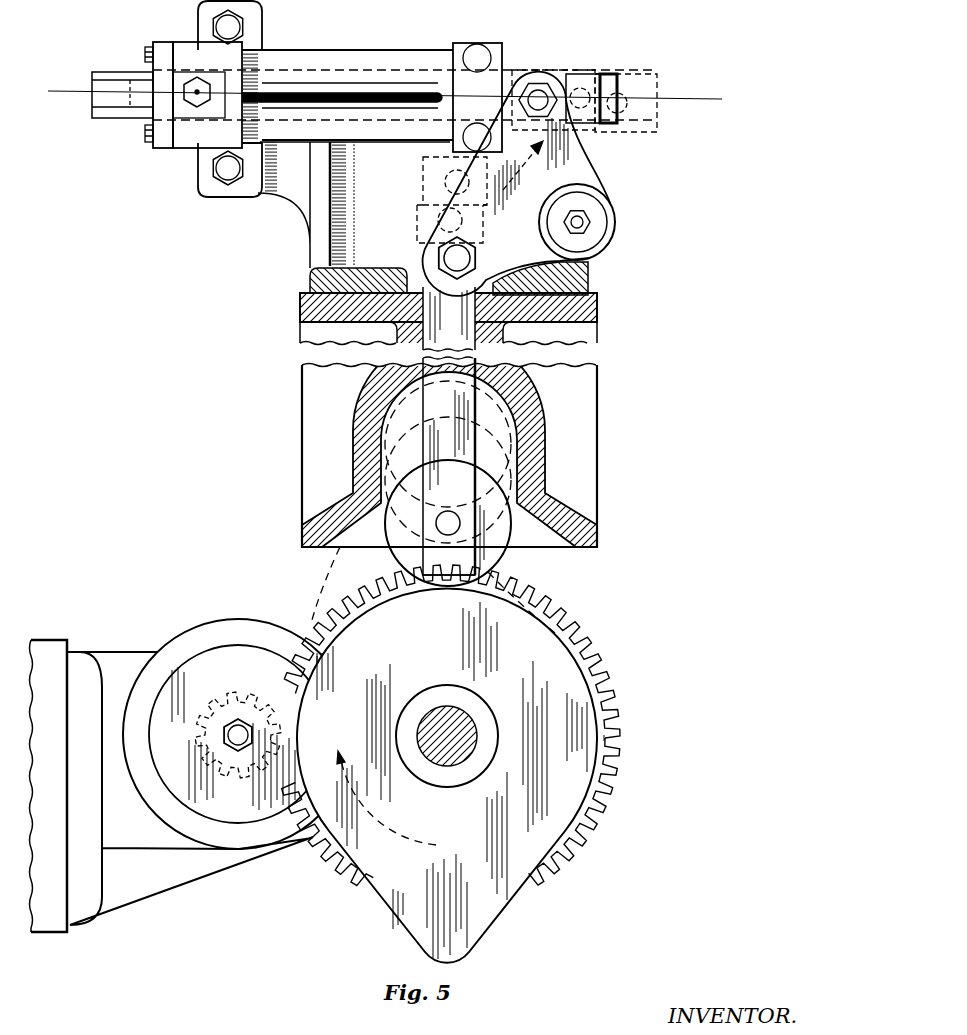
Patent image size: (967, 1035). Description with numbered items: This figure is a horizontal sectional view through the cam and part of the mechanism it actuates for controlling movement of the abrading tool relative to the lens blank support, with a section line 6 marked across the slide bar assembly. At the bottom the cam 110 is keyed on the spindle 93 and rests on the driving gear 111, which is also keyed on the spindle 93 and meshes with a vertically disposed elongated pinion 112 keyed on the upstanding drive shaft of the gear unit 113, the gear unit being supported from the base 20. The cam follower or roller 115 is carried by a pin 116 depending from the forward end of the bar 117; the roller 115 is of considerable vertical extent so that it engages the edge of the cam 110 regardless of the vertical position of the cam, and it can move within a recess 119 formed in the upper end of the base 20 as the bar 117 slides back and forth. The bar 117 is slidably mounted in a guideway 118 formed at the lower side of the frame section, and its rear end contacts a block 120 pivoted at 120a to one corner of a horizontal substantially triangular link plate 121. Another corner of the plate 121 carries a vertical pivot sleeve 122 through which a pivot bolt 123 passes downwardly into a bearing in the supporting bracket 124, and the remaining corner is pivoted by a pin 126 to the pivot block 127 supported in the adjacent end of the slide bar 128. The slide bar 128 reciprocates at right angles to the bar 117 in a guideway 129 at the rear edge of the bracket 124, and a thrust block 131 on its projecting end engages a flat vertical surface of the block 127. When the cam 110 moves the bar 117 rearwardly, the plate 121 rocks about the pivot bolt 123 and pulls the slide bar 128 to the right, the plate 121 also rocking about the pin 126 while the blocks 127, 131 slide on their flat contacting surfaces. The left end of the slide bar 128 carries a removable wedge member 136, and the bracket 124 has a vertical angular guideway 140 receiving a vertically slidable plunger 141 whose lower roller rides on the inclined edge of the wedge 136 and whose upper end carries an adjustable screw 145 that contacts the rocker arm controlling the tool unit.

The section line 6- 6 is at (692, 101).
The supporting base 20 is at (583, 403).
The spindle 93 is at (430, 706).
The cam 110 is at (479, 892).
The driving gear 111 is at (605, 797).
The pinion 112 is at (237, 702).
The gear unit 113 is at (237, 633).
The cam follower roller 115 is at (63, 693).
The pin 116 is at (452, 505).
The bar 117 is at (437, 562).
The guideway 118 is at (472, 330).
The recess 119 is at (358, 433).
The block 120 is at (428, 265).
The pivot 120a is at (476, 262).
The link plate 121 is at (570, 167).
The pivot sleeve 122 is at (606, 198).
The pivot bolt 123 is at (590, 222).
The supporting bracket 124 is at (395, 193).
The pivot pin 126 is at (540, 82).
The pivot block 127 is at (512, 74).
The slide bar 128 is at (123, 76).
The guideway 129 is at (359, 61).
The thrust block 131 is at (585, 76).
The wedge member 136 is at (100, 85).
The guideway 140 is at (236, 63).
The plunger 141 is at (187, 82).
The screw 145 is at (195, 98).